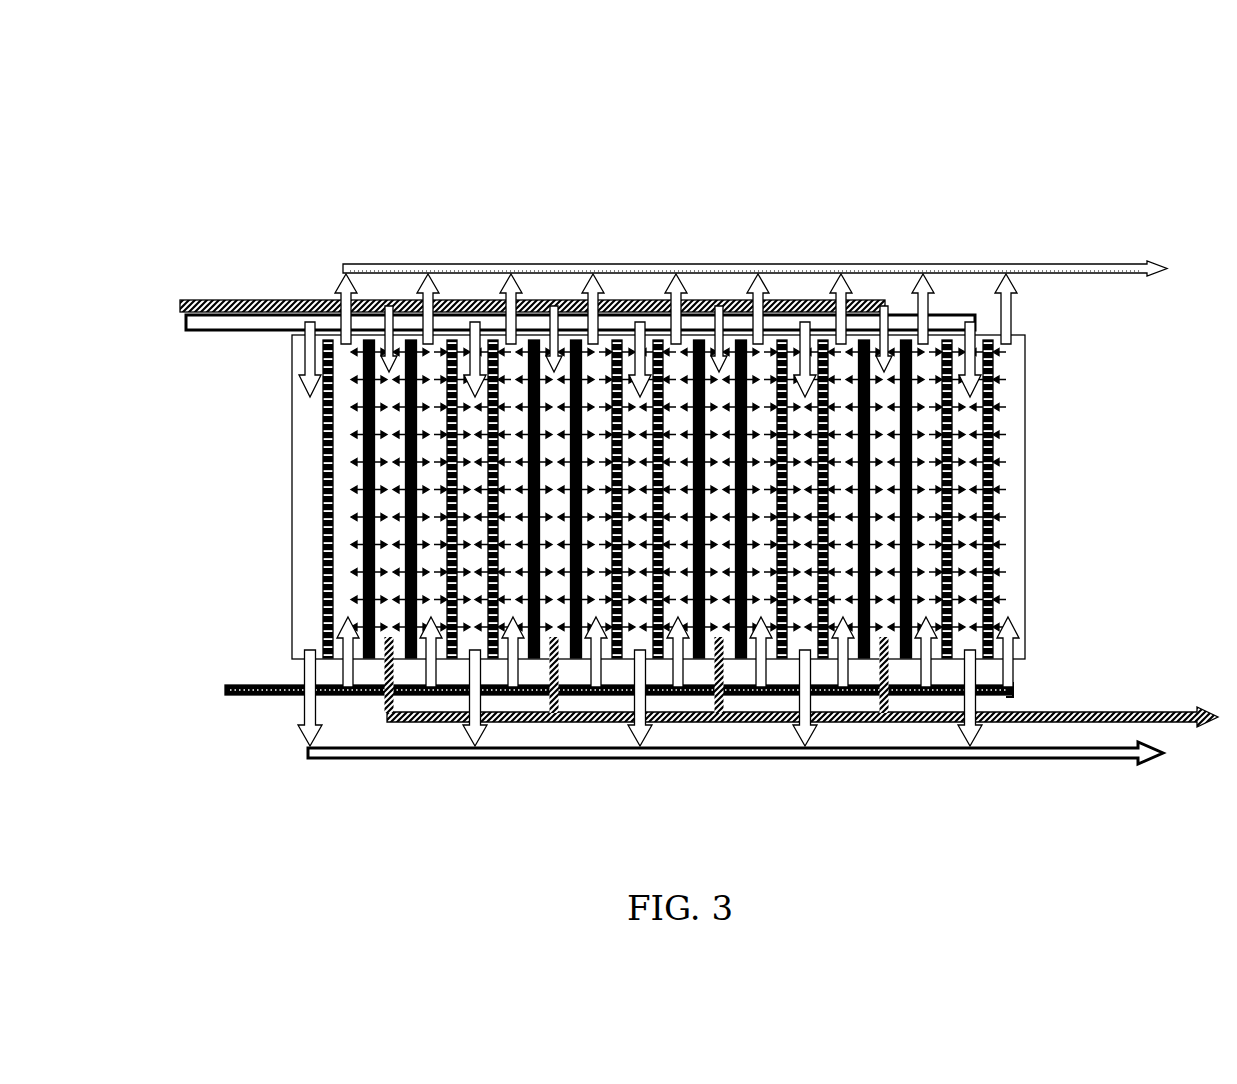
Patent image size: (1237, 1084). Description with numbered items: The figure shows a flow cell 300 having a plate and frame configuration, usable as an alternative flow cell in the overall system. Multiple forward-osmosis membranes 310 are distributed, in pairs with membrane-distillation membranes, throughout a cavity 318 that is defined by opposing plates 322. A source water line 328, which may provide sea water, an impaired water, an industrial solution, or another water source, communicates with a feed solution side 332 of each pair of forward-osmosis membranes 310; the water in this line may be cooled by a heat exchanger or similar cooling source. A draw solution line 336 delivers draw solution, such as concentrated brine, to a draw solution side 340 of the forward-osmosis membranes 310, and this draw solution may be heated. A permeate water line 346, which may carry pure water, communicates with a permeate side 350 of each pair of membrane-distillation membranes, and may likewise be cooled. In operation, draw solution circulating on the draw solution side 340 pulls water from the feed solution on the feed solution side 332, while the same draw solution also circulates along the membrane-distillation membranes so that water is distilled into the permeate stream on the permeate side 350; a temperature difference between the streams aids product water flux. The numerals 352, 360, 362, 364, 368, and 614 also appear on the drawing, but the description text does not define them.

The flow cell 300 is at (708, 444).
The forward-osmosis membranes 310 is at (405, 530).
The cavity 318 is at (1007, 405).
The opposing plates 322 is at (292, 660).
The source water line 328 is at (218, 299).
The feed solution side 332 is at (383, 640).
The draw solution line 336 is at (1010, 668).
The draw solution side 340 is at (568, 648).
The permeate water line 346 is at (266, 332).
The permeate side 350 is at (648, 640).
The flow channels 352 is at (772, 660).
The concentrate outlet pipe 360 is at (1150, 723).
The product stream outlets 362 is at (1017, 333).
The product outlet manifold 364 is at (732, 265).
The outlet manifold 368 is at (1045, 762).
The ion exchange membranes 614 is at (948, 530).